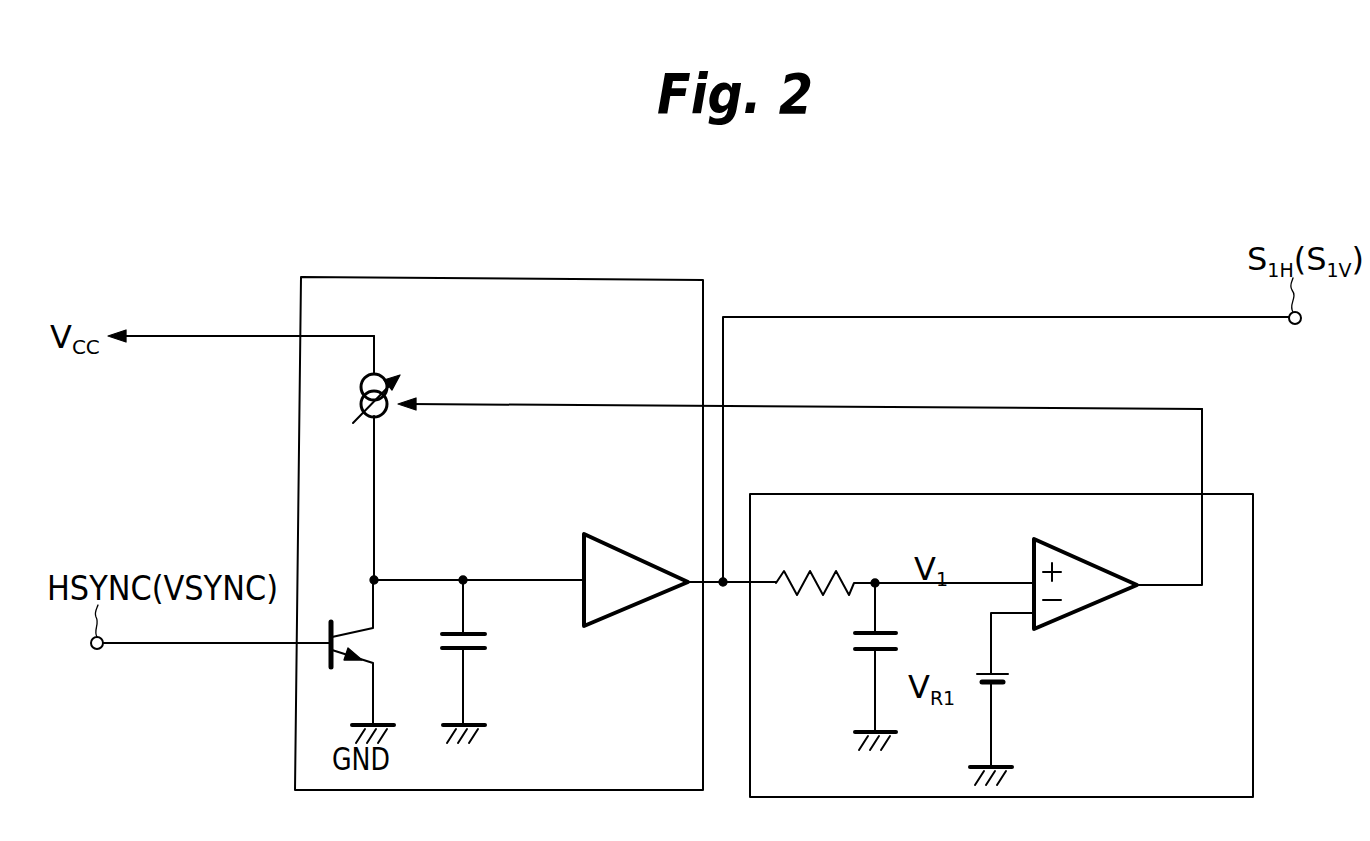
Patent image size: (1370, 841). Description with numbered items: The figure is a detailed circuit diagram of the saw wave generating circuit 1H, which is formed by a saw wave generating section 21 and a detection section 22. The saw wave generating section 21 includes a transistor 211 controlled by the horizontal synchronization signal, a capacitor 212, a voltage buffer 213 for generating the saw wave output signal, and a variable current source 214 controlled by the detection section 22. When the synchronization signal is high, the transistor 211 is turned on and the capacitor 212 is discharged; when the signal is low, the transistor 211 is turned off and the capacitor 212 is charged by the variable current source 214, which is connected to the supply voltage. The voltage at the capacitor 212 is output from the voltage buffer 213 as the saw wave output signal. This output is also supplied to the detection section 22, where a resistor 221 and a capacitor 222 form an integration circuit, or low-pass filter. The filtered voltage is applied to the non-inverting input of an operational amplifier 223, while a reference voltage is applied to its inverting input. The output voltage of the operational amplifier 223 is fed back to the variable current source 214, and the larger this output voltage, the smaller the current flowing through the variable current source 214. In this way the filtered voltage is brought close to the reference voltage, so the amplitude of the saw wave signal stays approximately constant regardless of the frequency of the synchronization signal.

The saw wave generating circuit 1H is at (1200, 144).
The saw wave generating section 21 is at (497, 279).
The detection section 22 is at (970, 494).
The transistor 211 is at (362, 655).
The capacitor 212 is at (474, 630).
The voltage buffer 213 is at (608, 542).
The variable current source 214 is at (383, 418).
The resistor 221 is at (810, 580).
The capacitor 222 is at (884, 626).
The operational amplifier 223 is at (1076, 568).